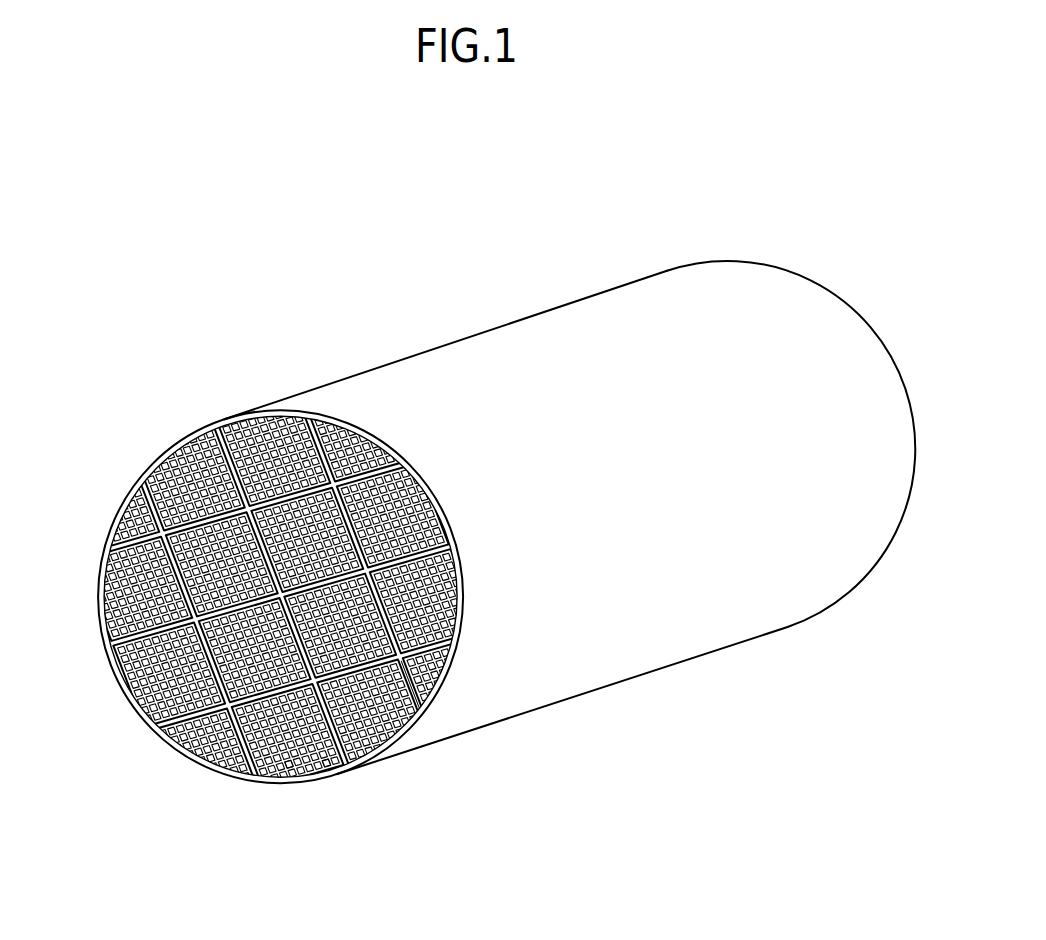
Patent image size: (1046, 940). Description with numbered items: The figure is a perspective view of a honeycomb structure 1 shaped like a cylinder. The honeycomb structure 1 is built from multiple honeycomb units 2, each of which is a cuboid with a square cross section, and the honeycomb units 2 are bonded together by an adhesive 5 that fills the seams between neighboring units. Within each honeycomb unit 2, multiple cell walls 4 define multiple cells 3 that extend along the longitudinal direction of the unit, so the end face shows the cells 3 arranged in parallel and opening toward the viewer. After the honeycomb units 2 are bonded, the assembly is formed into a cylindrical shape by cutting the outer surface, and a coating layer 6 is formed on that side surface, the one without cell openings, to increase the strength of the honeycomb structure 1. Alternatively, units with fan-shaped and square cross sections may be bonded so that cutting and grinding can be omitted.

The honeycomb structure 1 is at (450, 316).
The honeycomb unit 2 is at (197, 570).
The cell 3 is at (293, 771).
The cell wall 4 is at (322, 763).
The adhesive 5 is at (420, 706).
The coating layer 6 is at (138, 478).